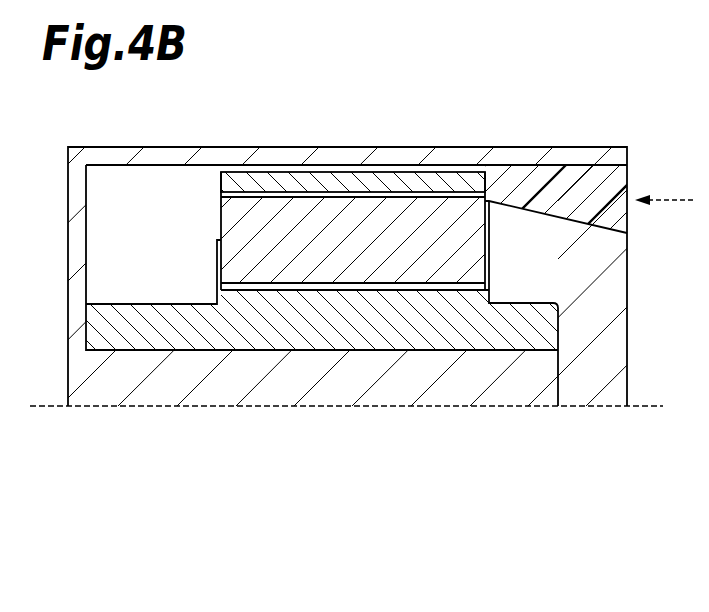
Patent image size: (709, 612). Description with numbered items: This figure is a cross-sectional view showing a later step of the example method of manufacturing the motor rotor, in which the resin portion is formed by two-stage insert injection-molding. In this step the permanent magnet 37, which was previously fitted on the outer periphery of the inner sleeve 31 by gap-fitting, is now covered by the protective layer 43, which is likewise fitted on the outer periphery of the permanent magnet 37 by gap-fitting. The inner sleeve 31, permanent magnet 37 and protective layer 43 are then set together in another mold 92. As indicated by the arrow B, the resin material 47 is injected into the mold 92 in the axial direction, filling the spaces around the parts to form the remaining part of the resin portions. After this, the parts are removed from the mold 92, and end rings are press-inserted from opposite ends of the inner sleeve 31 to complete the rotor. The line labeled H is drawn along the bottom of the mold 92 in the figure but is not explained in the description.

The mold 92 is at (269, 157).
The protective layer 43 is at (335, 182).
The permanent magnet 37 is at (433, 218).
The resin material 47 is at (612, 182).
The arrow B is at (668, 205).
The inner sleeve 31 is at (430, 334).
The reference plane H is at (641, 407).